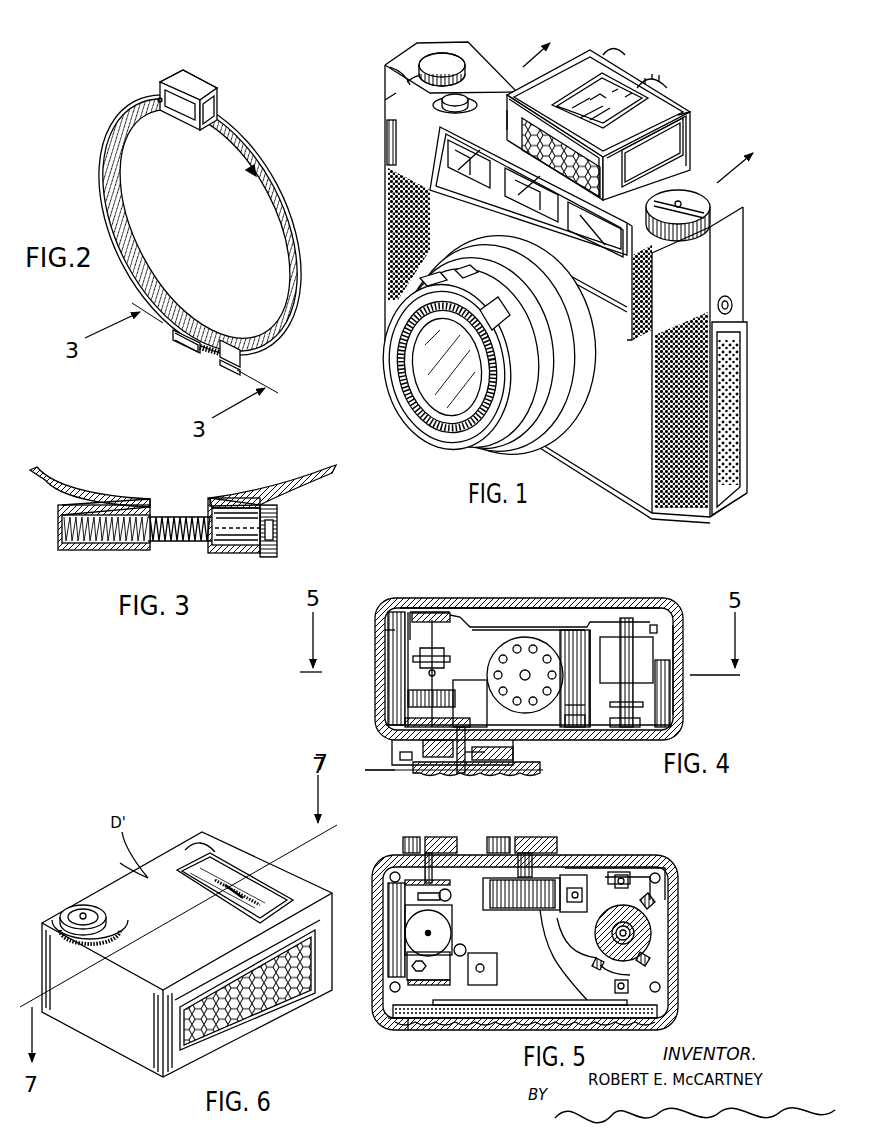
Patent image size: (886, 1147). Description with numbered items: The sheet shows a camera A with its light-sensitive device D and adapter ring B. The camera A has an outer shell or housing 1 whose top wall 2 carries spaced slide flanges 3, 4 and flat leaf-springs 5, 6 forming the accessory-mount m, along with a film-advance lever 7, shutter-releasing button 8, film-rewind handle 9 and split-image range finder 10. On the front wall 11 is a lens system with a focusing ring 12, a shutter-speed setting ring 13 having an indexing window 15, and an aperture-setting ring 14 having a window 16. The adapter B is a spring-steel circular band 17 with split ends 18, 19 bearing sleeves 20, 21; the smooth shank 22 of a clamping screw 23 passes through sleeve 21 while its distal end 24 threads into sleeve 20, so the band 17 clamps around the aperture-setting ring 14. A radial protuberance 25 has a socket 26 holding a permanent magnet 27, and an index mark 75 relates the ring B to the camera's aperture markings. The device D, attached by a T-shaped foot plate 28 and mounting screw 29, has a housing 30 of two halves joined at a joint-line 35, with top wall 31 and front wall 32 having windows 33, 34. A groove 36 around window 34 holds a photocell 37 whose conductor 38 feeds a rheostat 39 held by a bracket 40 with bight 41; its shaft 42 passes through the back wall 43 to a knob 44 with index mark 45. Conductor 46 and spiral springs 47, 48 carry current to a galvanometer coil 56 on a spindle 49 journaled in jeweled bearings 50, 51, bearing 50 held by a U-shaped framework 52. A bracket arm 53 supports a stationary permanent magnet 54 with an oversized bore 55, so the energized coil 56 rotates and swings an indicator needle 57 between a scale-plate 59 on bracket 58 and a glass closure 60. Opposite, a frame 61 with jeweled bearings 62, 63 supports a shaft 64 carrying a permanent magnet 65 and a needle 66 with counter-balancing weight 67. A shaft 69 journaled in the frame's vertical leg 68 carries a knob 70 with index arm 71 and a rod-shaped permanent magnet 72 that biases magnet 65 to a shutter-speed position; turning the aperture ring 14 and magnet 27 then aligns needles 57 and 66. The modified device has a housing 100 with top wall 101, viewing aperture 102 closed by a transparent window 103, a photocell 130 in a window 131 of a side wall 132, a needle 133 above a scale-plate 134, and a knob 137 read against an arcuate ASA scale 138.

In FIG. 1, the outer shell or housing 1 is at (402, 147).
In FIG. 1, the top wall 2 is at (407, 82).
In FIG. 4, the top wall 2 is at (390, 767).
In FIG. 4, the slide flange 3 is at (390, 748).
In FIG. 4, the slide flange 4 is at (513, 757).
In FIG. 4, the leaf-spring 5 is at (402, 770).
In FIG. 4, the leaf-spring 6 is at (505, 775).
In FIG. 1, the film-advance lever 7 is at (487, 70).
In FIG. 1, the shutter-releasing button 8 is at (438, 105).
In FIG. 1, the film-rewind handle 9 is at (697, 203).
In FIG. 1, the split-image range finder 10 is at (372, 146).
In FIG. 1, the front wall 11 is at (397, 262).
In FIG. 1, the focusing ring 12 is at (497, 353).
In FIG. 1, the shutter-speed setting ring 13 is at (530, 447).
In FIG. 1, the aperture-setting ring 14 is at (397, 307).
In FIG. 1, the indexing window or opening 15 is at (445, 253).
In FIG. 1, the window or opening 16 is at (415, 282).
In FIG. 2, the circular band 17 is at (268, 207).
In FIG. 3, the circular band 17 is at (333, 470).
In FIG. 2, the split end 18 is at (207, 340).
In FIG. 3, the split end 18 is at (142, 503).
In FIG. 2, the split end 19 is at (237, 352).
In FIG. 3, the split end 19 is at (220, 498).
In FIG. 3, the tubular sleeve 20 is at (92, 550).
In FIG. 2, the tubular sleeve 21 is at (227, 372).
In FIG. 3, the tubular sleeve 21 is at (228, 557).
In FIG. 3, the shank 22 is at (252, 530).
In FIG. 2, the clamping screw 23 is at (210, 353).
In FIG. 3, the clamping screw 23 is at (277, 543).
In FIG. 3, the distal end 24 is at (182, 517).
In FIG. 2, the protuberance 25 is at (195, 83).
In FIG. 2, the socket 26 is at (158, 98).
In FIG. 2, the permanent magnet 27 is at (167, 78).
In FIG. 4, the T-shaped foot plate 28 is at (443, 757).
In FIG. 4, the mounting screw 29 is at (470, 760).
In FIG. 1, the housing 30 is at (604, 106).
In FIG. 4, the housing 30 is at (684, 722).
In FIG. 5, the housing 30 is at (680, 1005).
In FIG. 1, the top wall 31 is at (580, 70).
In FIG. 4, the top wall 31 is at (650, 605).
In FIG. 1, the front wall 32 is at (517, 115).
In FIG. 5, the front wall 32 is at (650, 1030).
In FIG. 1, the window 33 is at (607, 96).
In FIG. 1, the window 34 is at (525, 137).
In FIG. 5, the window 34 is at (472, 1032).
In FIG. 1, the joint-line 35 is at (663, 153).
In FIG. 4, the joint-line 35 is at (378, 672).
In FIG. 5, the peripheral slot or groove 36 is at (410, 1030).
In FIG. 5, the photocell 37 is at (487, 1030).
In FIG. 5, the lead-wire or conductor 38 is at (545, 961).
In FIG. 4, the rheostat 39 is at (525, 638).
In FIG. 5, the rheostat 39 is at (525, 912).
In FIG. 4, the bracket 40 is at (562, 708).
In FIG. 5, the bracket 40 is at (585, 866).
In FIG. 5, the bight 41 is at (483, 908).
In FIG. 5, the shaft 42 is at (555, 865).
In FIG. 5, the back wall 43 is at (620, 870).
In FIG. 1, the operating knob or handle 44 is at (665, 84).
In FIG. 5, the operating knob or handle 44 is at (540, 845).
In FIG. 5, the index mark 45 is at (505, 840).
In FIG. 5, the lead-wire or conductor 46 is at (558, 940).
In FIG. 4, the spiral spring 47 is at (670, 608).
In FIG. 4, the spiral spring 48 is at (643, 703).
In FIG. 5, the spindle or shaft 49 is at (628, 933).
In FIG. 4, the jeweled bearing 50 is at (625, 620).
In FIG. 4, the jeweled bearing 51 is at (625, 728).
In FIG. 4, the U-shaped framework 52 is at (640, 650).
In FIG. 5, the U-shaped framework 52 is at (630, 890).
In FIG. 5, the bracket arm 53 is at (652, 960).
In FIG. 5, the permanent magnet 54 is at (652, 940).
In FIG. 5, the vertical bore 55 is at (650, 928).
In FIG. 5, the galvanometer coil 56 is at (653, 903).
In FIG. 1, the indicator needle 57 is at (683, 112).
In FIG. 4, the indicator needle 57 is at (558, 630).
In FIG. 4, the bracket 58 is at (587, 727).
In FIG. 5, the bracket 58 is at (497, 982).
In FIG. 4, the scale-plate 59 is at (582, 630).
In FIG. 1, the transparent glass closure 60 is at (630, 95).
In FIG. 4, the transparent glass closure 60 is at (495, 615).
In FIG. 4, the bracket or frame 61 is at (380, 722).
In FIG. 5, the bracket or frame 61 is at (405, 963).
In FIG. 4, the jeweled bearing 62 is at (430, 613).
In FIG. 4, the jeweled bearing 63 is at (412, 714).
In FIG. 4, the shaft 64 is at (410, 653).
In FIG. 5, the shaft 64 is at (426, 934).
In FIG. 4, the permanent magnet 65 is at (407, 697).
In FIG. 5, the permanent magnet 65 is at (407, 918).
In FIG. 1, the needle or indicating arm 66 is at (615, 90).
In FIG. 4, the needle or indicating arm 66 is at (478, 622).
In FIG. 4, the counter-balancing weight 67 is at (405, 633).
In FIG. 4, the vertical leg 68 is at (412, 615).
In FIG. 5, the vertical leg 68 is at (405, 882).
In FIG. 5, the shaft 69 is at (430, 855).
In FIG. 1, the knob or handle 70 is at (612, 103).
In FIG. 5, the knob or handle 70 is at (403, 846).
In FIG. 5, the index arm 71 is at (410, 840).
In FIG. 4, the permanent magnet 72 is at (417, 657).
In FIG. 5, the permanent magnet 72 is at (450, 899).
In FIG. 2, the index mark 75 is at (250, 173).
In FIG. 6, the housing or shell 100 is at (295, 885).
In FIG. 6, the top wall 101 is at (230, 842).
In FIG. 6, the viewing aperture or window opening 102 is at (198, 858).
In FIG. 6, the transparent window 103 is at (205, 880).
In FIG. 6, the photocell 130 is at (227, 1027).
In FIG. 6, the window 131 is at (313, 977).
In FIG. 6, the side wall 132 is at (273, 1007).
In FIG. 6, the indicator arm or needle 133 is at (247, 885).
In FIG. 6, the scale-plate 134 is at (233, 888).
In FIG. 6, the knob 137 is at (70, 902).
In FIG. 6, the arcuate scale 138 is at (127, 920).
In FIG. 1, the camera A is at (561, 268).
In FIG. 2, the magnet-mounting ring or adapter B is at (196, 225).
In FIG. 1, the magnet-mounting ring or adapter B is at (480, 453).
In FIG. 1, the light-sensitive device D is at (657, 98).
In FIG. 4, the accessory-mount m is at (352, 785).